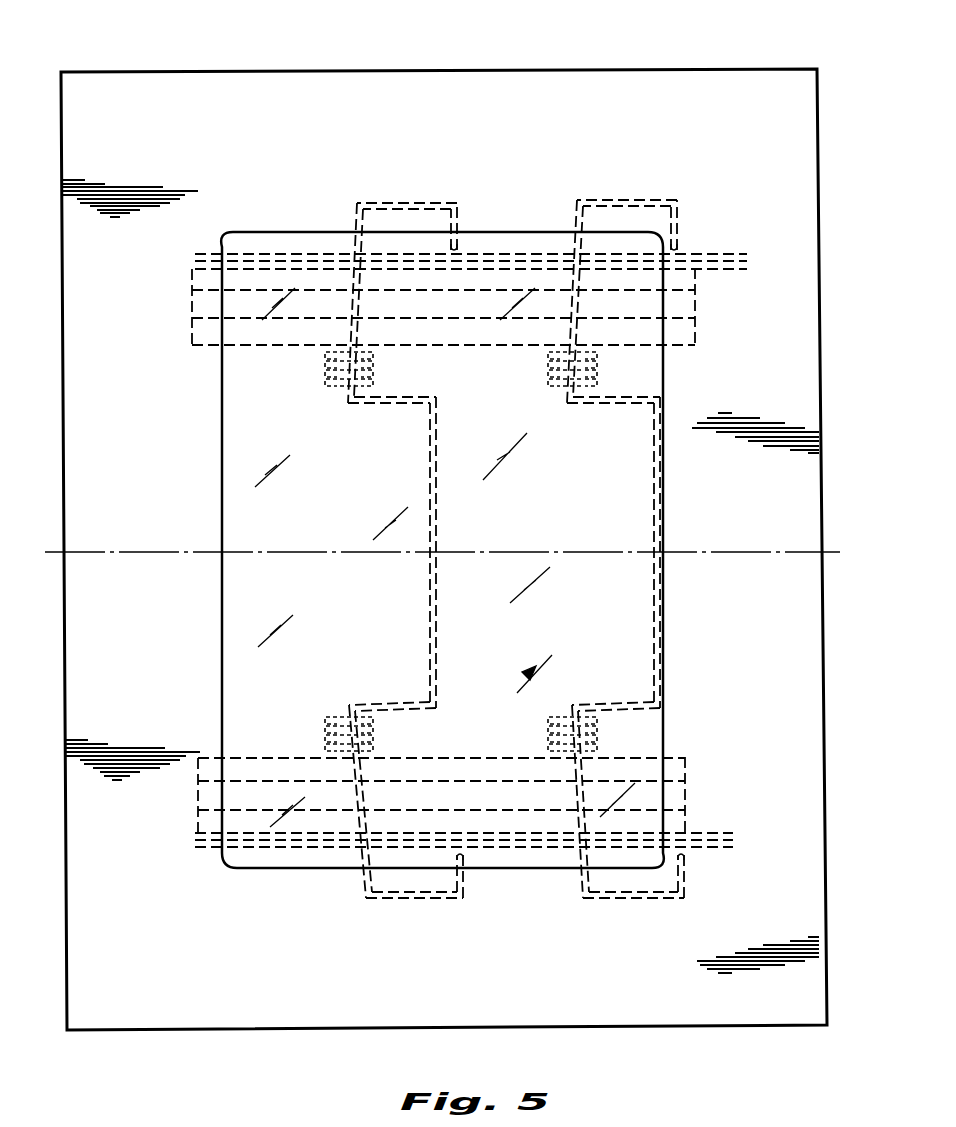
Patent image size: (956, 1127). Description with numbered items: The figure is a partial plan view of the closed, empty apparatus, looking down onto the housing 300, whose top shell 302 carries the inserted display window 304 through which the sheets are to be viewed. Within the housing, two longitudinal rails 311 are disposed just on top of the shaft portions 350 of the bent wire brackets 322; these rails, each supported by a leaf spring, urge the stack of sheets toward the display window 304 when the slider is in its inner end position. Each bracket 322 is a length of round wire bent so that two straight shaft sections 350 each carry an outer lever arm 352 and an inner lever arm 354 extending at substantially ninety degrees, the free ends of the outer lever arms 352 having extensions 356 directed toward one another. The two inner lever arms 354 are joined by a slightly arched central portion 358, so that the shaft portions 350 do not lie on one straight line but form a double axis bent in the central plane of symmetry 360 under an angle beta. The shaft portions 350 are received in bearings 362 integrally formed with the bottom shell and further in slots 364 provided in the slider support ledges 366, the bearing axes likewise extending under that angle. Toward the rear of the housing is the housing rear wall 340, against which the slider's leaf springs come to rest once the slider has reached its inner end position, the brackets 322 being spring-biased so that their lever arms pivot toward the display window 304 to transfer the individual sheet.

The housing 300 is at (441, 62).
The top shell 302 is at (572, 88).
The display window 304 is at (232, 663).
The longitudinal rails 311 is at (470, 340).
The bent wire member (bracket) 322 is at (650, 466).
The housing rear wall 340 is at (822, 410).
The shaft sections 350 is at (362, 318).
The outer lever arm 352 is at (416, 205).
The inner lever arm 354 is at (390, 402).
The extensions 356 is at (459, 225).
The central portion 358 is at (657, 558).
The central plane of symmetry 360 is at (147, 553).
The bearings 362 is at (322, 375).
The slots 364 is at (345, 250).
The slider support ledges 366 is at (731, 262).